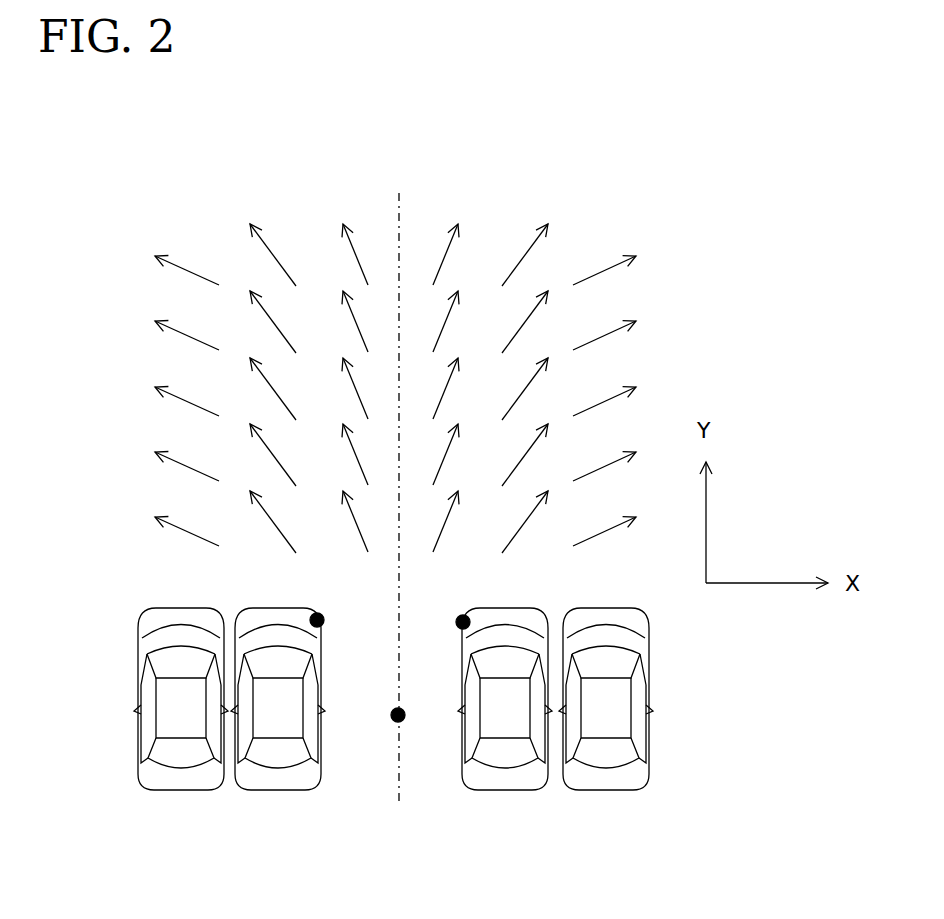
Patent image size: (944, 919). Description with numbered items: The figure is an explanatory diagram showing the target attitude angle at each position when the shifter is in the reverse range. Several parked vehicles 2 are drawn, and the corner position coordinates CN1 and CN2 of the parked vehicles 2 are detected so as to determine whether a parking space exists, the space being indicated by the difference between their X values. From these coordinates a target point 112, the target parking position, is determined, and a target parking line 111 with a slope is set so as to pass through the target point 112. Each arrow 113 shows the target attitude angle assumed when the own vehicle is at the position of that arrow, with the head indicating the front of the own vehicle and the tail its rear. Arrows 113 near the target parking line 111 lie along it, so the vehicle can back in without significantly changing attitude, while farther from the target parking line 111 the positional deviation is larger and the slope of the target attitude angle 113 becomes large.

The parked vehicle 2 is at (265, 790).
The target parking line 111 is at (402, 228).
The target point 112 is at (394, 721).
The arrow 113 is at (535, 228).
The corner position coordinate CN1 is at (459, 617).
The corner position coordinate CN2 is at (337, 597).